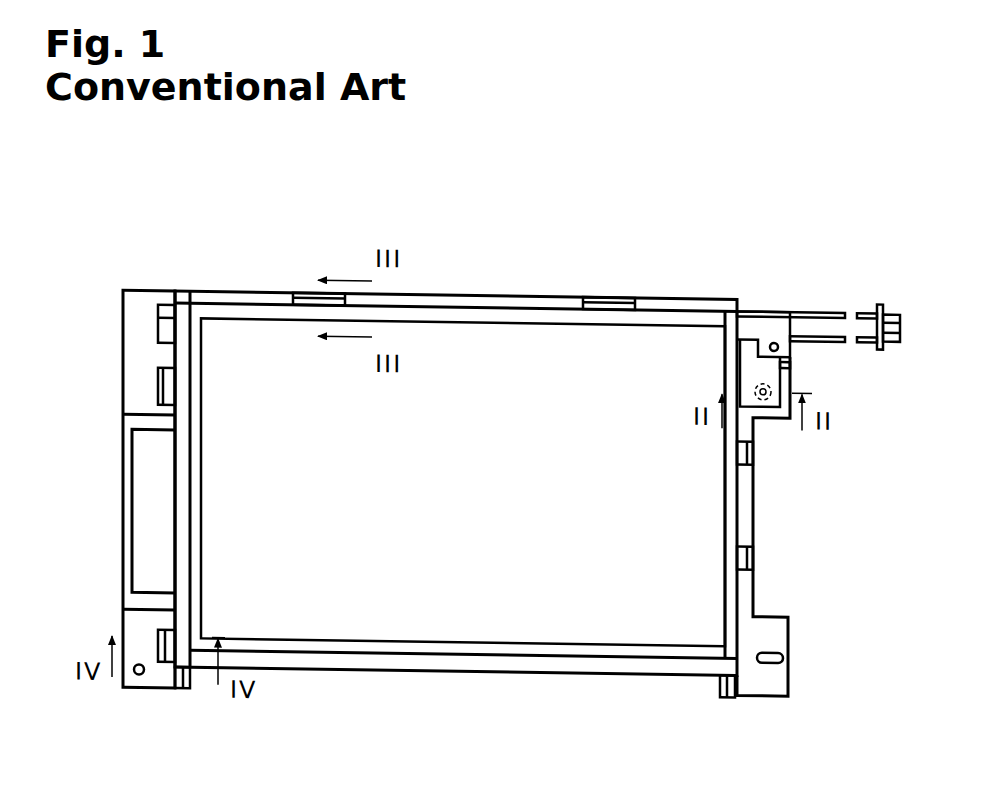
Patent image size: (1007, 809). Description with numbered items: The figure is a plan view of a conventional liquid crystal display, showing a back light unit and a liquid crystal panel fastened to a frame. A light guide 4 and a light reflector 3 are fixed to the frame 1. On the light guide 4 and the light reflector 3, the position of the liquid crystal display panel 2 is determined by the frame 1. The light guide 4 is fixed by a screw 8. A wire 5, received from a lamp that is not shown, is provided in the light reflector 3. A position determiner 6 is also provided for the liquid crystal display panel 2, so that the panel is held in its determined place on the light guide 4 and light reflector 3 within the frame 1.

The frame 1 is at (178, 290).
The liquid crystal display panel 2 is at (374, 688).
The light reflector 3 is at (762, 322).
The light guide 4 is at (765, 359).
The wire 5 is at (824, 303).
The position determiner 6 is at (158, 385).
The screw 8 is at (767, 399).